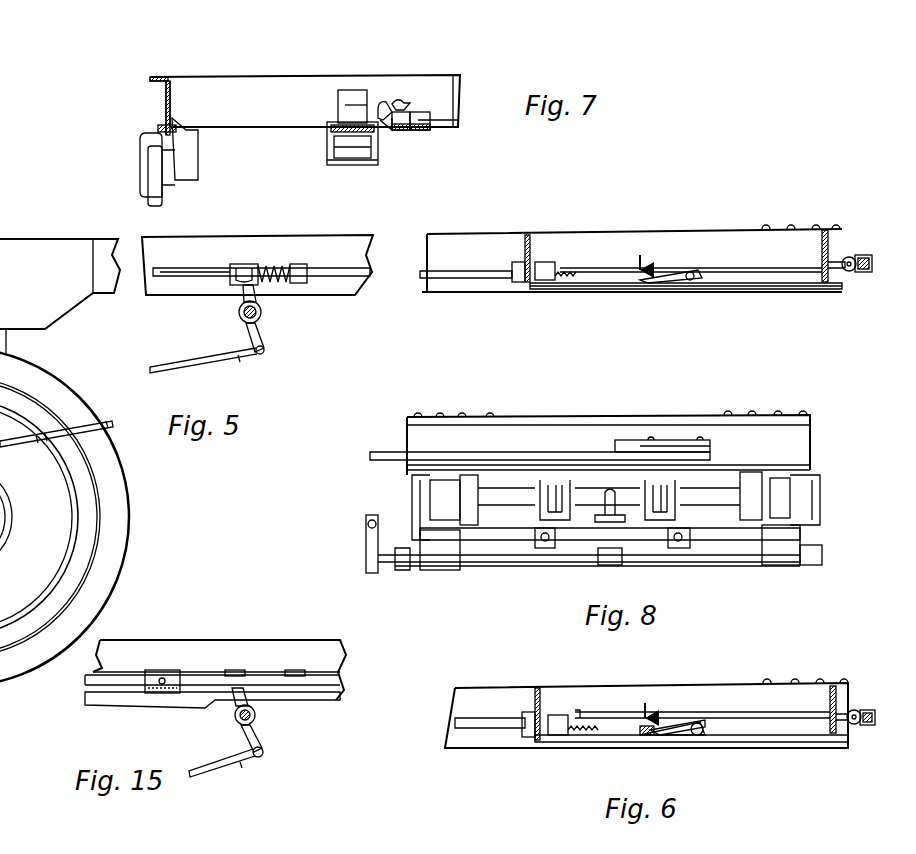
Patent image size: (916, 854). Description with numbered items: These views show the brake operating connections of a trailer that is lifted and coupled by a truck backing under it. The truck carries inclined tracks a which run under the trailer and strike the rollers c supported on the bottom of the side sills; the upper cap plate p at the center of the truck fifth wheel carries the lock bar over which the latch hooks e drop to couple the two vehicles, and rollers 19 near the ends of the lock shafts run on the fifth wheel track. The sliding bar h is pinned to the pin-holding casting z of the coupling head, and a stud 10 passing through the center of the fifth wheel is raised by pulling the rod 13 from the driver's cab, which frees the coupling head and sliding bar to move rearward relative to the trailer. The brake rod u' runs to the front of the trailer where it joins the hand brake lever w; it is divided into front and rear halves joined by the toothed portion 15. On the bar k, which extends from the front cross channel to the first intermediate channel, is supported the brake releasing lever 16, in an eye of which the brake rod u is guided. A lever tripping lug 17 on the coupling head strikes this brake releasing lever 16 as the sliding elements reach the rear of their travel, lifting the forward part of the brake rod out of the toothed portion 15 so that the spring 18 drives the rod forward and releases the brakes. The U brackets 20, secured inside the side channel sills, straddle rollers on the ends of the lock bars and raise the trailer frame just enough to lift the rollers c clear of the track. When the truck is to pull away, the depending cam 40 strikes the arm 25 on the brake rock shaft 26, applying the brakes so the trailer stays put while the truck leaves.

In FIG. 7, the pin-holding casting z is at (350, 97).
In FIG. 7, the brake rod u is at (404, 92).
In FIG. 7, the U bracket 20 is at (195, 162).
In FIG. 7, the brake releasing lever 16 is at (398, 131).
In FIG. 5, the brake releasing lever 16 is at (665, 281).
In FIG. 6, the brake releasing lever 16 is at (683, 728).
In FIG. 7, the bar k is at (425, 130).
In FIG. 5, the bar k is at (632, 285).
In FIG. 7, the lever tripping lug 17 is at (380, 142).
In FIG. 6, the lever tripping lug 17 is at (660, 738).
In FIG. 5, the spring 18 is at (270, 262).
In FIG. 6, the brake rod u' is at (495, 715).
In FIG. 5, the brake rock shaft 26 is at (263, 314).
In FIG. 15, the brake rock shaft 26 is at (257, 716).
In FIG. 5, the toothed portion 15 is at (566, 282).
In FIG. 6, the toothed portion 15 is at (582, 738).
In FIG. 5, the brake lever w is at (862, 275).
In FIG. 8, the brake lever w is at (455, 437).
In FIG. 6, the brake lever w is at (862, 709).
In FIG. 8, the roller 19 is at (470, 495).
In FIG. 8, the latch hook e is at (560, 483).
In FIG. 8, the cap plate p is at (495, 503).
In FIG. 8, the roller c is at (410, 538).
In FIG. 8, the rod 13 is at (365, 530).
In FIG. 8, the track a is at (815, 548).
In FIG. 8, the stud 10 is at (595, 557).
In FIG. 15, the depending cam 40 is at (169, 694).
In FIG. 15, the arm 25 is at (238, 707).
In FIG. 15, the sliding bar h is at (330, 697).